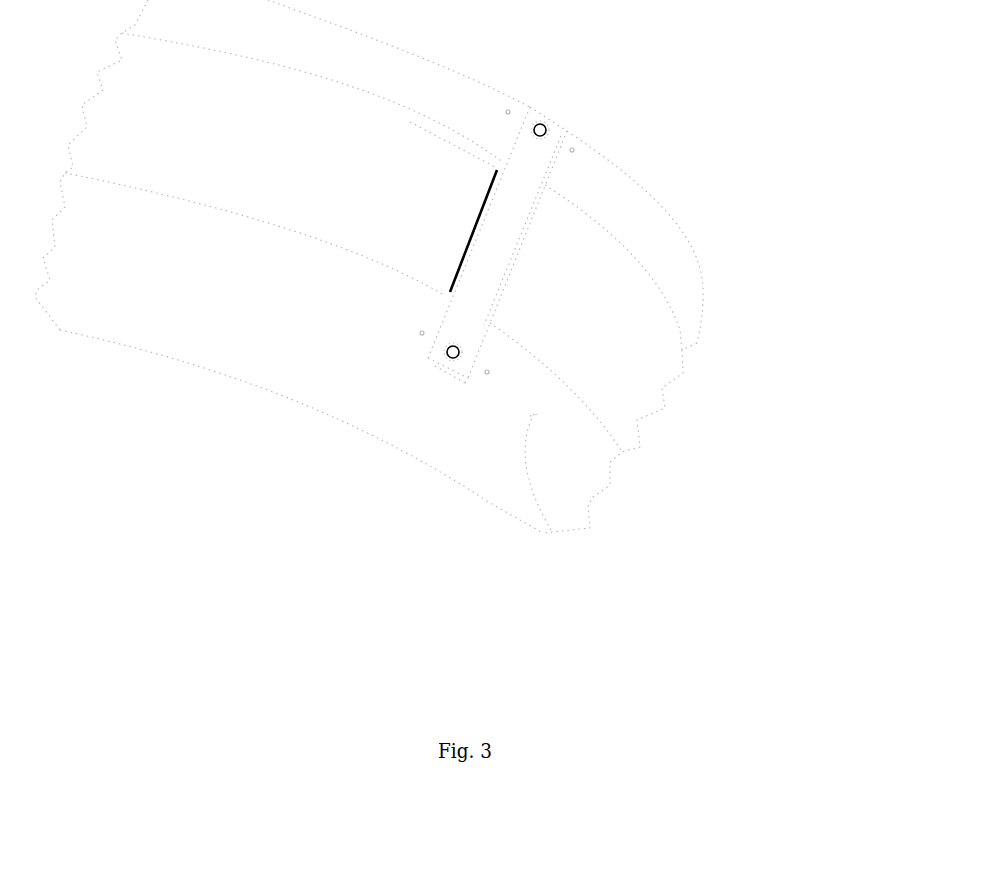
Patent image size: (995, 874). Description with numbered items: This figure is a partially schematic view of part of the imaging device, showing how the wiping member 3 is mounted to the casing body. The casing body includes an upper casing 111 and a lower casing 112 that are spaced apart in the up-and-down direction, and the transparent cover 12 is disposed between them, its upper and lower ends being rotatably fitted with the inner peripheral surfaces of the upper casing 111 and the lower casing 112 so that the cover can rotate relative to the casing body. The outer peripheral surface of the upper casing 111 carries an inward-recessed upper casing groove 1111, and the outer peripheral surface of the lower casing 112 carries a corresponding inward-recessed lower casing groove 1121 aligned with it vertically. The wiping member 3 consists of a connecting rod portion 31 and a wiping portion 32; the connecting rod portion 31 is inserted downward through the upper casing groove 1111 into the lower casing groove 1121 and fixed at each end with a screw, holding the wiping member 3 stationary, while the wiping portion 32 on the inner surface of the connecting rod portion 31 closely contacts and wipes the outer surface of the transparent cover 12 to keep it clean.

The upper casing 111 is at (688, 287).
The upper casing groove 1111 is at (558, 163).
The lower casing 112 is at (550, 533).
The lower casing groove 1121 is at (427, 340).
The transparent cover 12 is at (620, 370).
The wiping member 3 is at (422, 349).
The connecting rod portion 31 is at (497, 323).
The wiping portion 32 is at (440, 367).